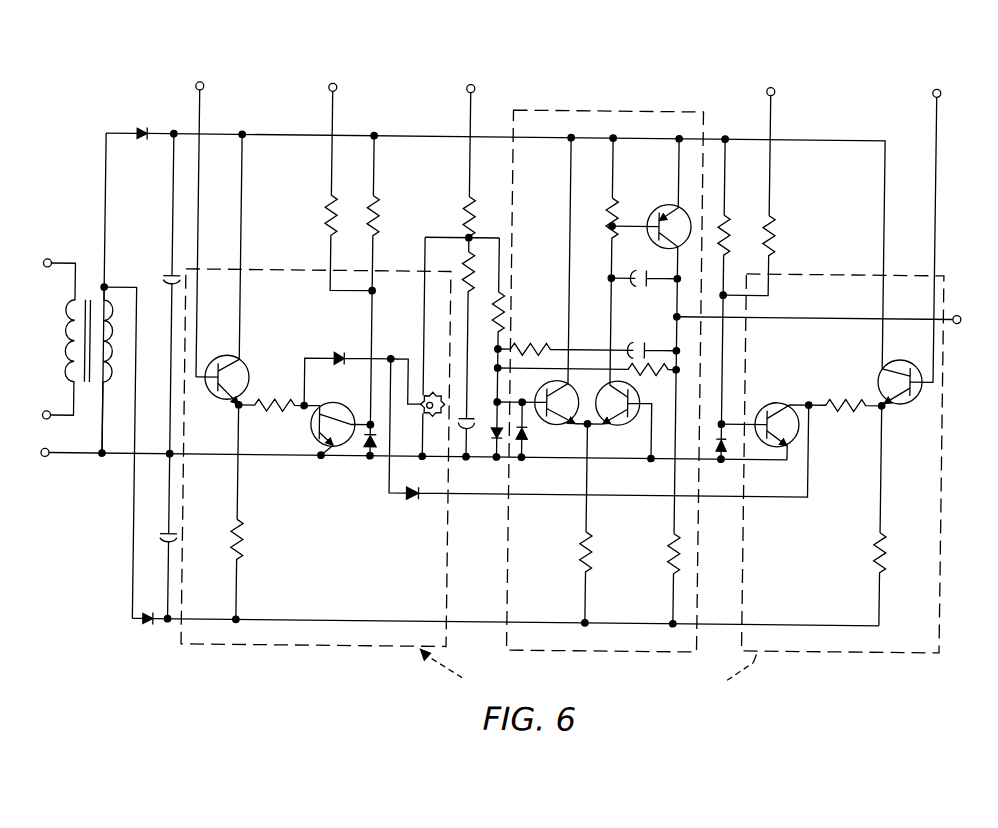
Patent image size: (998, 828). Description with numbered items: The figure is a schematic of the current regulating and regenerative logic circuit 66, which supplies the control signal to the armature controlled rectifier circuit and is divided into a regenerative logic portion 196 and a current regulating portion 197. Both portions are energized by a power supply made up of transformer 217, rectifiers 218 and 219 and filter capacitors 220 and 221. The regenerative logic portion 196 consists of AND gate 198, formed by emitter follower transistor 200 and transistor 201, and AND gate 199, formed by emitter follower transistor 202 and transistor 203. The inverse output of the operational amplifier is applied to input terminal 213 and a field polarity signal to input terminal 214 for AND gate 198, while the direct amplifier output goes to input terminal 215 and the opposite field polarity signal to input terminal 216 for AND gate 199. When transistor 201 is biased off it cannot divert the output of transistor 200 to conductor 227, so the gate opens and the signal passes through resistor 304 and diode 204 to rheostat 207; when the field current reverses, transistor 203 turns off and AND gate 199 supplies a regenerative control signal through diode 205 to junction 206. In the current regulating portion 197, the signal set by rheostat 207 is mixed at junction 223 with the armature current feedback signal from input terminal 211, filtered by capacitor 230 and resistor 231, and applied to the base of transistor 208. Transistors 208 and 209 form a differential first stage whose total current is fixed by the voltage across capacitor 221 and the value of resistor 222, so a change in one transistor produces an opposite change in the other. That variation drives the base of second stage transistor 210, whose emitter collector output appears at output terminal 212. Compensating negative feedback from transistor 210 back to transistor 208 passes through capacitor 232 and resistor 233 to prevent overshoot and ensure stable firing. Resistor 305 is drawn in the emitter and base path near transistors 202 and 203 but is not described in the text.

The current regulating and regenerative logic circuit 66 is at (274, 136).
The regenerative logic portion 196 is at (588, 670).
The current regulating portion 197 is at (604, 110).
The AND gate 198 is at (239, 650).
The AND gate 199 is at (878, 654).
The transistor 200 is at (245, 366).
The transistor 201 is at (312, 436).
The transistor 202 is at (881, 375).
The transistor 203 is at (776, 400).
The diode 204 is at (342, 357).
The diode 205 is at (414, 500).
The junction 206 is at (397, 347).
The rheostat 207 is at (428, 413).
The transistor 208 is at (549, 423).
The transistor 209 is at (619, 423).
The transistor 210 is at (667, 203).
The input terminal 211 is at (471, 90).
The output terminal 212 is at (956, 311).
The input terminal 213 is at (198, 86).
The input terminal 214 is at (333, 90).
The input terminal 215 is at (929, 89).
The input terminal 216 is at (771, 90).
The transformer 217 is at (81, 270).
The rectifier 218 is at (146, 133).
The rectifier 219 is at (147, 628).
The filter capacitor 220 is at (166, 279).
The filter capacitor 221 is at (174, 542).
The resistor 222 is at (581, 538).
The junction 223 is at (465, 236).
The conductor 227 is at (271, 458).
The capacitor 230 is at (471, 429).
The resistor 231 is at (466, 270).
The capacitor 232 is at (647, 333).
The resistor 233 is at (548, 347).
The resistor 304 is at (290, 385).
The resistor 305 is at (858, 405).